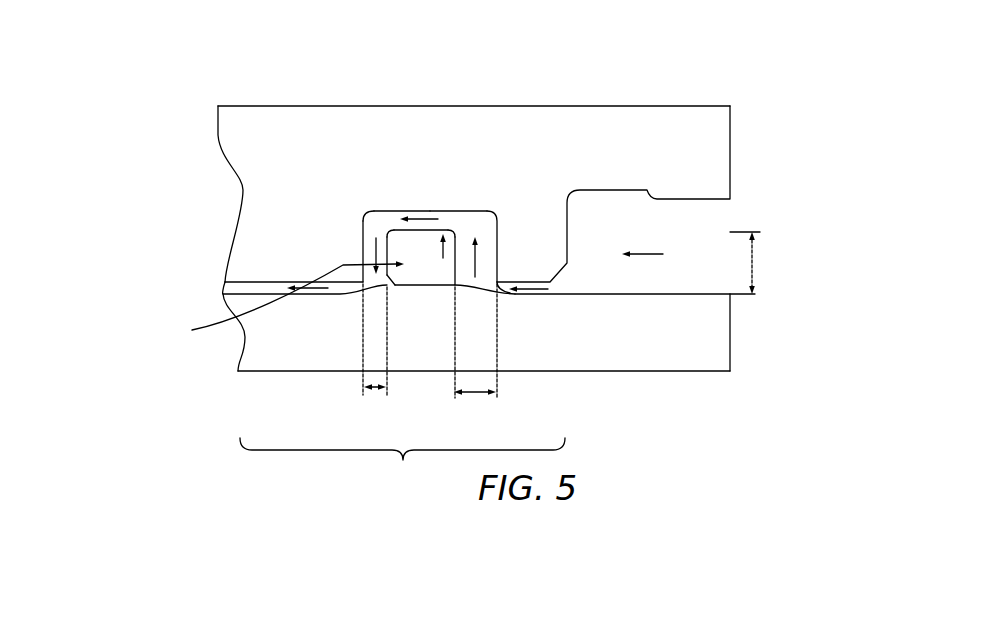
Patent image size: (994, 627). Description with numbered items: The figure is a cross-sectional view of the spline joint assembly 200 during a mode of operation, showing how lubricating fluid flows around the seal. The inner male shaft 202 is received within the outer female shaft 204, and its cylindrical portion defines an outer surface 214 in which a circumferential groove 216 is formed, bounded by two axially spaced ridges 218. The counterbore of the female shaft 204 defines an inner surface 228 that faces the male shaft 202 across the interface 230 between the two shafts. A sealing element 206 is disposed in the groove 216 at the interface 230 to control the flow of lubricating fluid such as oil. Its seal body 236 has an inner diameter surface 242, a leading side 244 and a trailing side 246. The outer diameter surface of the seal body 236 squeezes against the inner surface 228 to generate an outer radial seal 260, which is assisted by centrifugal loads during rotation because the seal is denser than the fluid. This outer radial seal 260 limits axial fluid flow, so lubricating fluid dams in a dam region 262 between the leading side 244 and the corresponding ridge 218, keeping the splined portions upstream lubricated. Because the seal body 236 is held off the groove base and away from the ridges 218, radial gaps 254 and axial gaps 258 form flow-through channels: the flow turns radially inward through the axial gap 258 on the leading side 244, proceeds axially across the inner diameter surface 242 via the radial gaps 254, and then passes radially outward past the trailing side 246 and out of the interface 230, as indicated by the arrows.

The spline joint assembly 200 is at (146, 151).
The male shaft 202 is at (708, 143).
The female shaft 204 is at (712, 340).
The sealing element 206 is at (280, 300).
The outer surface 214 is at (383, 193).
The groove 216 is at (352, 200).
The ridges 218 is at (333, 257).
The inner surface 228 is at (656, 304).
The interface 230 is at (402, 350).
The seal body 236 is at (423, 275).
The inner diameter surface 242 is at (427, 230).
The leading side 244 is at (455, 237).
The trailing side 246 is at (387, 235).
The radial gaps 254 is at (443, 201).
The axial gaps 258 is at (377, 393).
The outer radial seal 260 is at (401, 292).
The dam region 262 is at (488, 280).